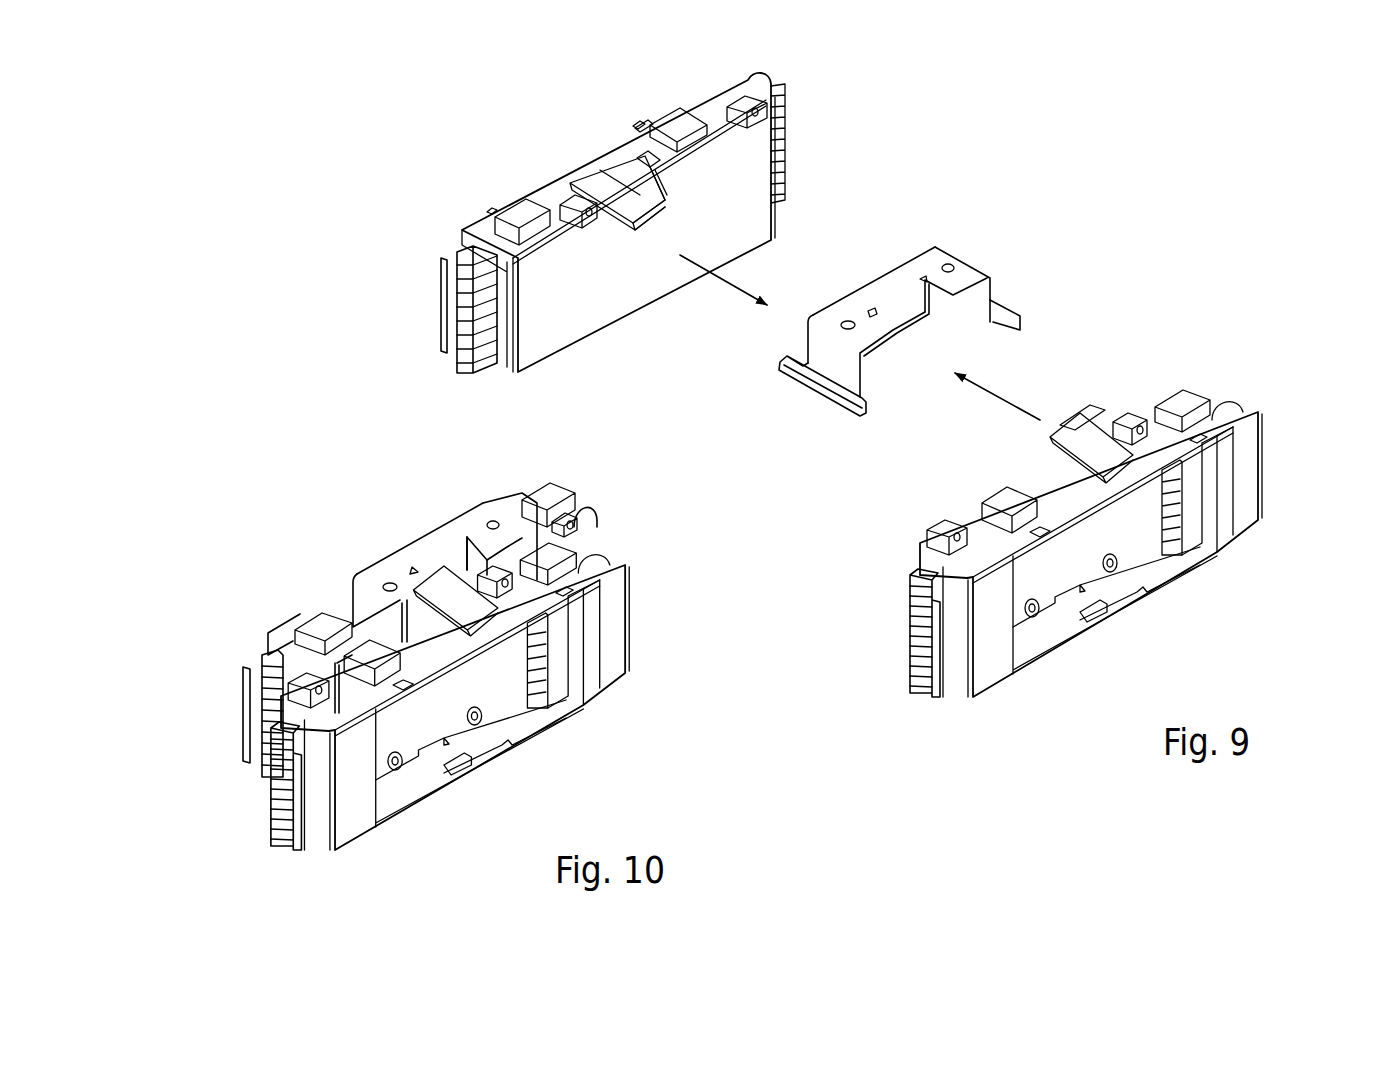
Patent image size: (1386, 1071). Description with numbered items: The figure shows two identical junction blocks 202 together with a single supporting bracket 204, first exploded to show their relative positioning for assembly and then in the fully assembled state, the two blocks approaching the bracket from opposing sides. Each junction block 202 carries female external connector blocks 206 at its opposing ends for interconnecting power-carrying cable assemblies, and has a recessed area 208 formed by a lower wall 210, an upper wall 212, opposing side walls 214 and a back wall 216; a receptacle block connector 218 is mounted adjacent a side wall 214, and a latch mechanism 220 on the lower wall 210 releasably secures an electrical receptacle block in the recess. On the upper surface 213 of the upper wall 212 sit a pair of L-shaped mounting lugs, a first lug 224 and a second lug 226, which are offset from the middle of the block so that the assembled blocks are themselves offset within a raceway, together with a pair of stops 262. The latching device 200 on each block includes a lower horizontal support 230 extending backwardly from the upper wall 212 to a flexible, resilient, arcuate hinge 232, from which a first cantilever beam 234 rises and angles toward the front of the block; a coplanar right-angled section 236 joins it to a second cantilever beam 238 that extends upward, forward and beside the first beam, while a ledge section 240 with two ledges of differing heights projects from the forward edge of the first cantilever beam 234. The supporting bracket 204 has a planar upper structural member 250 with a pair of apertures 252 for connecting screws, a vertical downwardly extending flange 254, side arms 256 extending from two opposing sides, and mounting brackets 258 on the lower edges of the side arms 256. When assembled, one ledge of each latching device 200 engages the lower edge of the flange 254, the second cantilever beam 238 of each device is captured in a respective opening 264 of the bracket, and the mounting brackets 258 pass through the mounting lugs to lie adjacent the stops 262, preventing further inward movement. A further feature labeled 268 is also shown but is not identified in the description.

In FIG. 9, the latching device 200 is at (616, 226).
In FIG. 9, the junction block 202 is at (790, 122).
In FIG. 10, the junction block 202 is at (263, 615).
In FIG. 9, the supporting bracket 204 is at (940, 232).
In FIG. 10, the supporting bracket 204 is at (473, 494).
In FIG. 9, the female external connector block 206 is at (447, 368).
In FIG. 10, the female external connector block 206 is at (239, 728).
In FIG. 10, the recessed area 208 is at (487, 687).
In FIG. 9, the lower wall 210 is at (1150, 540).
In FIG. 10, the lower wall 210 is at (405, 795).
In FIG. 9, the upper wall 212 is at (543, 187).
In FIG. 10, the upper wall 212 is at (337, 605).
In FIG. 9, the upper surface 213 is at (873, 341).
In FIG. 10, the upper surface 213 is at (467, 658).
In FIG. 9, the side wall 214 is at (1212, 470).
In FIG. 10, the side wall 214 is at (578, 623).
In FIG. 9, the back wall 216 is at (1106, 587).
In FIG. 10, the back wall 216 is at (471, 740).
In FIG. 9, the receptacle block connector 218 is at (1180, 523).
In FIG. 10, the receptacle block connector 218 is at (537, 668).
In FIG. 9, the latch mechanism 220 is at (1099, 612).
In FIG. 10, the latch mechanism 220 is at (468, 768).
In FIG. 9, the first lug 224 is at (682, 116).
In FIG. 10, the first lug 224 is at (375, 650).
In FIG. 9, the second lug 226 is at (517, 207).
In FIG. 10, the second lug 226 is at (578, 526).
In FIG. 9, the lower horizontal support 230 is at (597, 182).
In FIG. 10, the lower horizontal support 230 is at (497, 600).
In FIG. 9, the hinge 232 is at (643, 216).
In FIG. 9, the first cantilever beam 234 is at (655, 188).
In FIG. 9, the right-angled section 236 is at (652, 170).
In FIG. 9, the second cantilever beam 238 is at (640, 120).
In FIG. 10, the second cantilever beam 238 is at (495, 582).
In FIG. 9, the ledge section 240 is at (1080, 410).
In FIG. 9, the upper structural member 250 is at (890, 280).
In FIG. 10, the upper structural member 250 is at (445, 535).
In FIG. 9, the aperture 252 is at (956, 268).
In FIG. 10, the aperture 252 is at (497, 523).
In FIG. 9, the downwardly extending flange 254 is at (907, 314).
In FIG. 10, the downwardly extending flange 254 is at (438, 562).
In FIG. 9, the side arm 256 is at (812, 347).
In FIG. 10, the side arm 256 is at (390, 587).
In FIG. 9, the mounting bracket 258 is at (1010, 312).
In FIG. 9, the stop 262 is at (646, 128).
In FIG. 10, the stop 262 is at (483, 638).
In FIG. 9, the opening 264 is at (925, 282).
In FIG. 9, the hole 268 is at (1046, 612).
In FIG. 10, the hole 268 is at (435, 738).